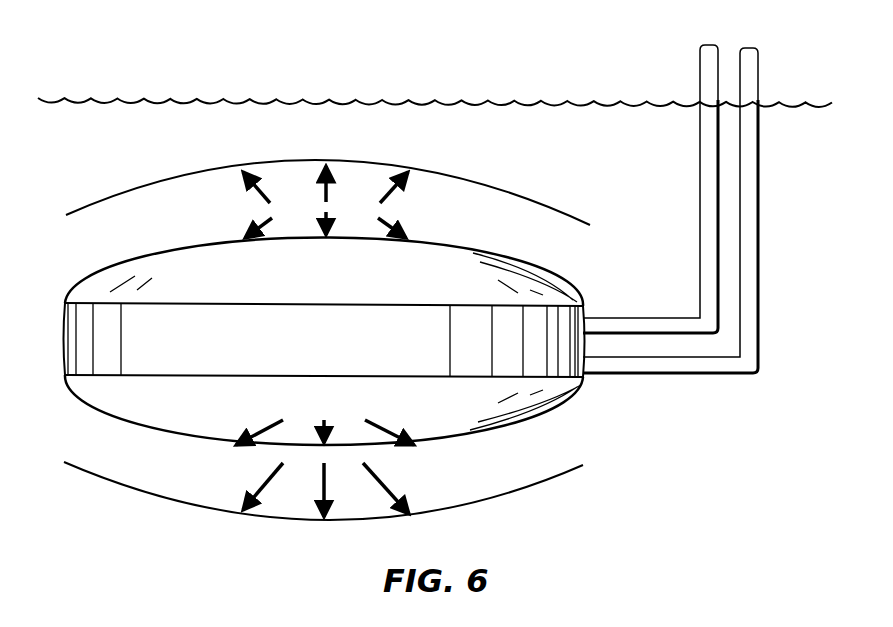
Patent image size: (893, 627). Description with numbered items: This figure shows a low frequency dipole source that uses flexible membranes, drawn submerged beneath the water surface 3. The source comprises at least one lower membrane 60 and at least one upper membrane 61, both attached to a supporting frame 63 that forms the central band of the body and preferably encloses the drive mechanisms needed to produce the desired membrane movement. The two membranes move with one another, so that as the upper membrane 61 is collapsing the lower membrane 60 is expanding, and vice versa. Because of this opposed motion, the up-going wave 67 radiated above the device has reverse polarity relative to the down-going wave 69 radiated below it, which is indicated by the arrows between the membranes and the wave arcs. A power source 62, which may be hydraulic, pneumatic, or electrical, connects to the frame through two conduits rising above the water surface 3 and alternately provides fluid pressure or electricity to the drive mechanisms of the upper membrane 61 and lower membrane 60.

The water surface 3 is at (153, 100).
The lower membrane 60 is at (92, 390).
The upper membrane 61 is at (92, 285).
The power source 62 is at (718, 172).
The supporting frame 63 is at (63, 333).
The up-going wave 67 is at (88, 204).
The down-going wave 69 is at (88, 470).